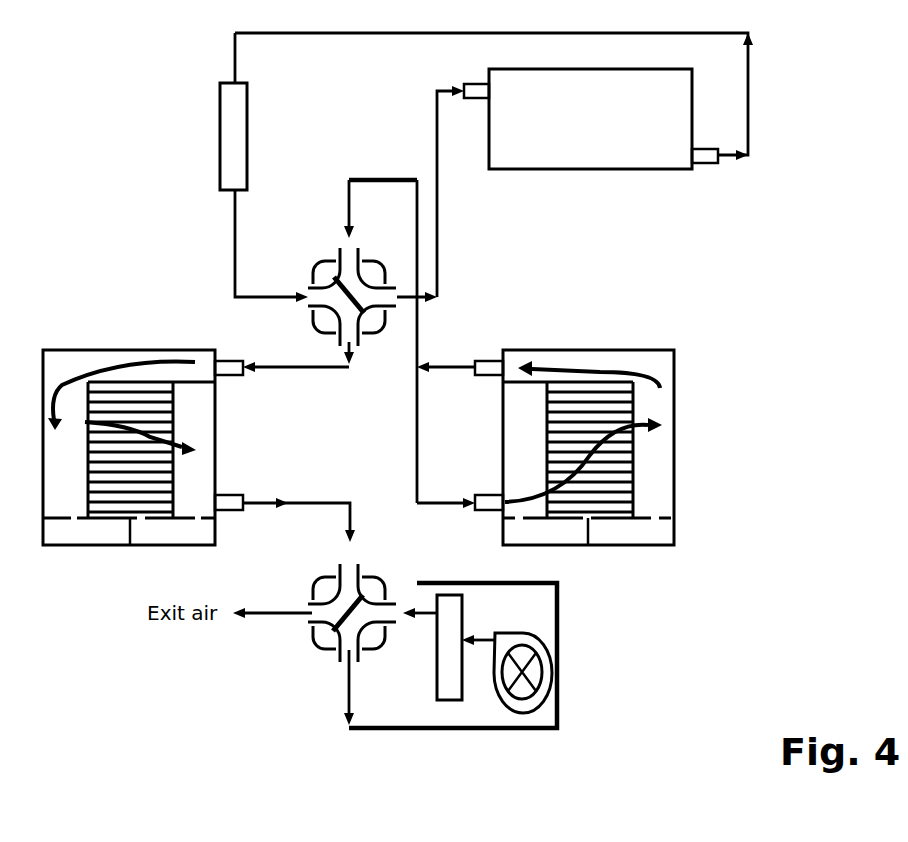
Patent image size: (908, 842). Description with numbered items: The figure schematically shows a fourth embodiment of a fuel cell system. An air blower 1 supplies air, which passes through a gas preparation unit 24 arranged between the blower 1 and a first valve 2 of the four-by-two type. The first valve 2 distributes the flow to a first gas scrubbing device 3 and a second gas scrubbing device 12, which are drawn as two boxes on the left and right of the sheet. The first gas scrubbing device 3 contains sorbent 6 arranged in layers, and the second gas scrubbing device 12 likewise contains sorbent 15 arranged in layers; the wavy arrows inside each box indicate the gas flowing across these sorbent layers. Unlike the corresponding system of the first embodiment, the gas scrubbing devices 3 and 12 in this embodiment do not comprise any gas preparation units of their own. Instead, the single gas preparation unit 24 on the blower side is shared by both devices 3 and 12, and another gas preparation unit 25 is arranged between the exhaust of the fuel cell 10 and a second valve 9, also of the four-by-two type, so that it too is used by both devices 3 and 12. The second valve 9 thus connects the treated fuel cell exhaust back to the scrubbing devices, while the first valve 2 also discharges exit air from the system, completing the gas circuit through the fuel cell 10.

The air blower 1 is at (560, 631).
The first valve 2 is at (317, 640).
The first gas scrubbing device 3 is at (596, 407).
The sorbent 6 is at (607, 477).
The second valve 9 is at (330, 268).
The fuel cell 10 is at (664, 150).
The second gas scrubbing device 12 is at (167, 400).
The sorbent 15 is at (145, 465).
The gas preparation unit 24 is at (452, 700).
The gas preparation unit 25 is at (228, 168).